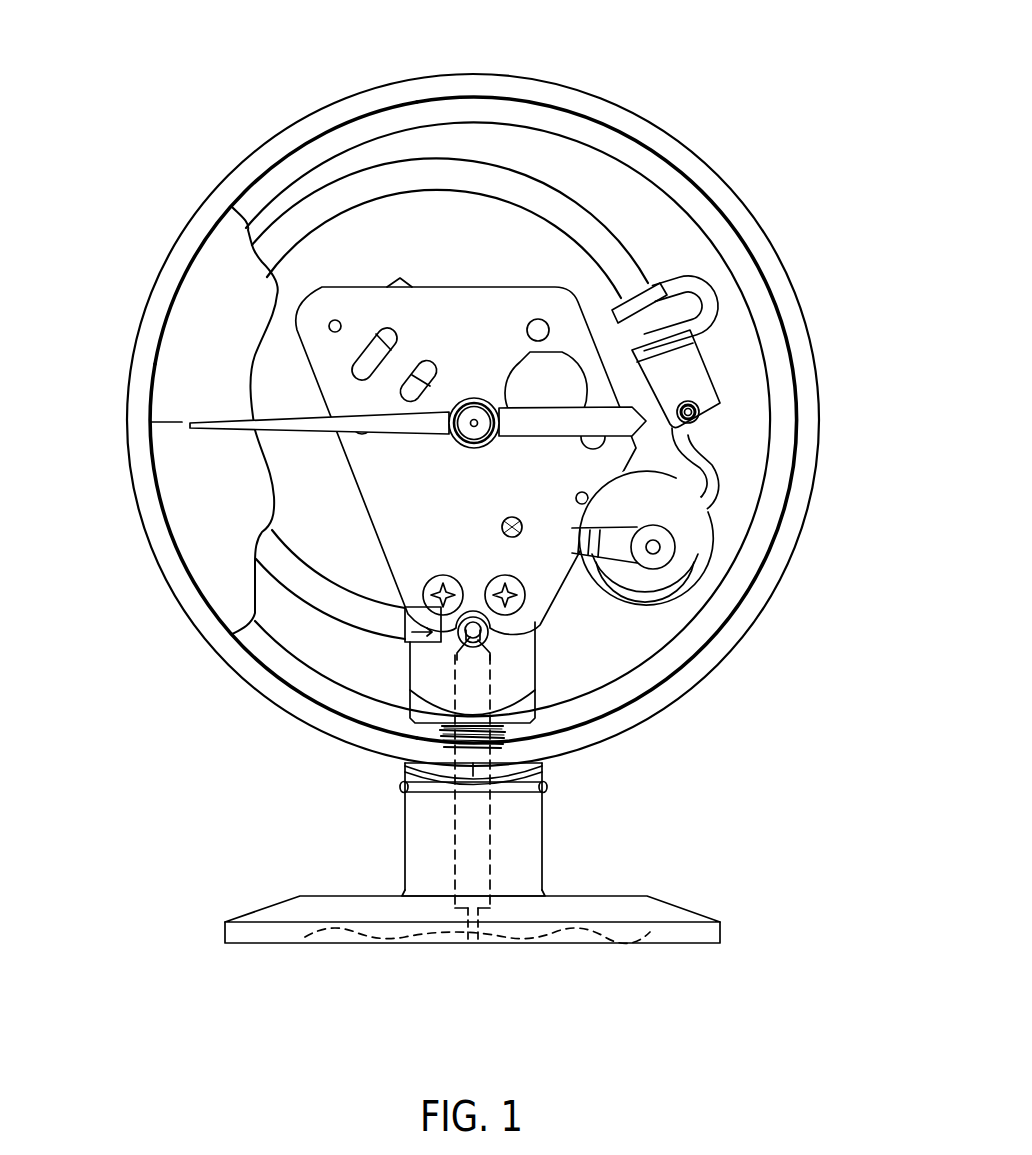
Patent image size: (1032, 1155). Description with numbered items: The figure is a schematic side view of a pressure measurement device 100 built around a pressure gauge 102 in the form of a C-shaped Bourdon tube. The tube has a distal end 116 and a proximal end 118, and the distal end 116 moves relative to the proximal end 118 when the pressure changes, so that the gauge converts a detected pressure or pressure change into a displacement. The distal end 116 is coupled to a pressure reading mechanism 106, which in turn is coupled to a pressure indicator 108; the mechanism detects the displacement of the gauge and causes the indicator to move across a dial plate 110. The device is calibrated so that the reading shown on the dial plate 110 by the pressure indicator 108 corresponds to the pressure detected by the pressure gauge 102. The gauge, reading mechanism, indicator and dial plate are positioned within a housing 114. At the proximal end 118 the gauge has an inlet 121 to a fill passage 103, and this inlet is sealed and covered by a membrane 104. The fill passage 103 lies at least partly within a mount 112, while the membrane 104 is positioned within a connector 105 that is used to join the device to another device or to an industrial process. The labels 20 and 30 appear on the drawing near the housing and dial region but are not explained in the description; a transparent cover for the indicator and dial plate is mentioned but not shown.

The pressure measurement device 100 is at (705, 92).
The pressure gauge 102 is at (522, 193).
The fill passage 103 is at (457, 815).
The membrane 104 is at (541, 928).
The connector 105 is at (658, 910).
The pressure reading mechanism 106 is at (603, 606).
The pressure indicator 108 is at (220, 430).
The dial plate 110 is at (230, 257).
The mount 112 is at (542, 822).
The housing 114 is at (810, 333).
The distal end 116 is at (660, 277).
The proximal end 118 is at (455, 655).
The inlet 121 is at (407, 642).
The case portion 20 is at (182, 557).
The bezel portion 30 is at (181, 287).